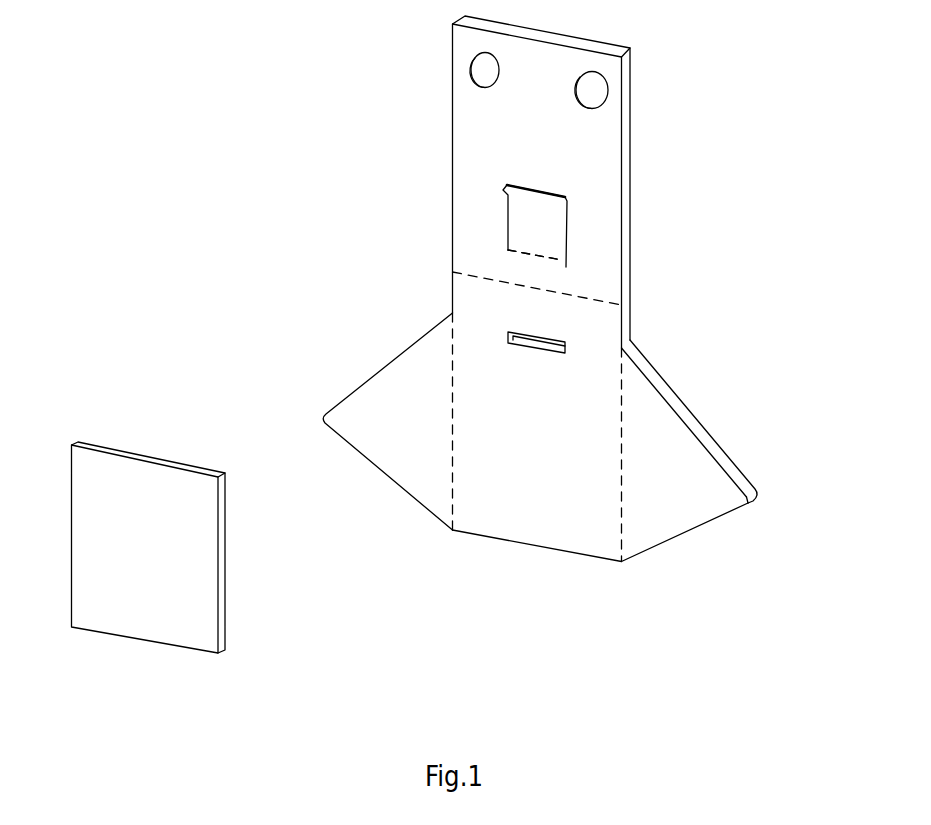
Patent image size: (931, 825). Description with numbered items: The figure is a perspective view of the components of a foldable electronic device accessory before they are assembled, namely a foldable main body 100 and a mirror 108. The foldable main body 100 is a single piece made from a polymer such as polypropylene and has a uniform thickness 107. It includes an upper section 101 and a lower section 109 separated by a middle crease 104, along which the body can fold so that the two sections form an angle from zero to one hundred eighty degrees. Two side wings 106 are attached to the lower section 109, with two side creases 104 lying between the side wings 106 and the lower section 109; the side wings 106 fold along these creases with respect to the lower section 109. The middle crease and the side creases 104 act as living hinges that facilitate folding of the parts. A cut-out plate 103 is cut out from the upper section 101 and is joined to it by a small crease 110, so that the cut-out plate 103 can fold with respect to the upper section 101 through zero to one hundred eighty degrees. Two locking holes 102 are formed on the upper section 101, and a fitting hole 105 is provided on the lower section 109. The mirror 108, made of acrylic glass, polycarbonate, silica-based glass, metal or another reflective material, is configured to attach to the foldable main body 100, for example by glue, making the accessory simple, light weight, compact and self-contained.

The foldable main body 100 is at (358, 186).
The upper section 101 is at (473, 157).
The locking holes 102 is at (604, 80).
The cut-out plate 103 is at (527, 197).
The middle crease and side creases 104 is at (600, 300).
The fitting hole 105 is at (513, 330).
The side wings 106 is at (387, 383).
The uniform thickness 107 is at (733, 470).
The mirror 108 is at (180, 572).
The lower section 109 is at (537, 520).
The small crease 110 is at (527, 258).